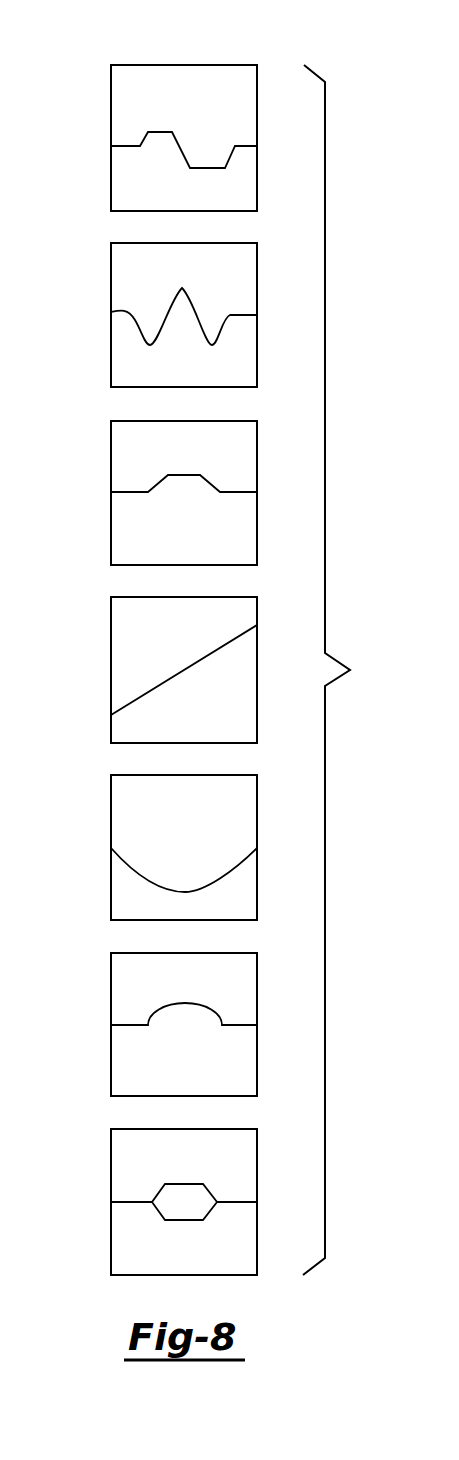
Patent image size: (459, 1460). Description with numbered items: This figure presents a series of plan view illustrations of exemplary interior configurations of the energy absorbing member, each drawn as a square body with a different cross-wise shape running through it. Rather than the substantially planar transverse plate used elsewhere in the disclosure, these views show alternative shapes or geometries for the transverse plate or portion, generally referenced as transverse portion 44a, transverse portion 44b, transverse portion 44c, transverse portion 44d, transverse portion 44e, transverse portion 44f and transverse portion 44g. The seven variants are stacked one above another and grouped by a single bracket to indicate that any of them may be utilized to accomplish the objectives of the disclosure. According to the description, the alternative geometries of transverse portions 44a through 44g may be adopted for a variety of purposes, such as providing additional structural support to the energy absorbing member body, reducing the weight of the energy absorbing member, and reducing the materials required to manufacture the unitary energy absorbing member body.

The transverse portion 44a is at (160, 131).
The transverse portion 44b is at (197, 310).
The transverse portion 44c is at (183, 474).
The transverse portion 44d is at (172, 678).
The transverse portion 44e is at (198, 890).
The transverse portion 44f is at (157, 1015).
The transverse portion 44g is at (185, 1184).